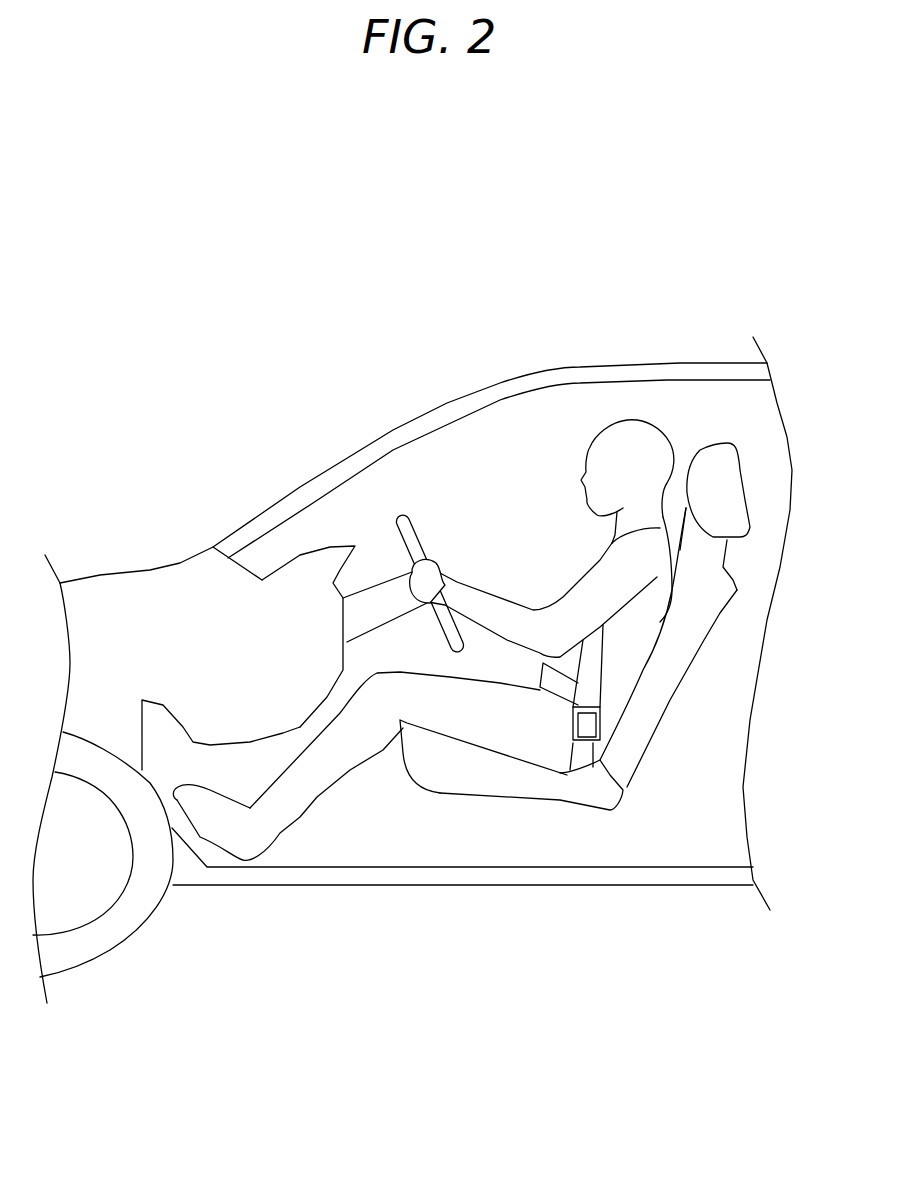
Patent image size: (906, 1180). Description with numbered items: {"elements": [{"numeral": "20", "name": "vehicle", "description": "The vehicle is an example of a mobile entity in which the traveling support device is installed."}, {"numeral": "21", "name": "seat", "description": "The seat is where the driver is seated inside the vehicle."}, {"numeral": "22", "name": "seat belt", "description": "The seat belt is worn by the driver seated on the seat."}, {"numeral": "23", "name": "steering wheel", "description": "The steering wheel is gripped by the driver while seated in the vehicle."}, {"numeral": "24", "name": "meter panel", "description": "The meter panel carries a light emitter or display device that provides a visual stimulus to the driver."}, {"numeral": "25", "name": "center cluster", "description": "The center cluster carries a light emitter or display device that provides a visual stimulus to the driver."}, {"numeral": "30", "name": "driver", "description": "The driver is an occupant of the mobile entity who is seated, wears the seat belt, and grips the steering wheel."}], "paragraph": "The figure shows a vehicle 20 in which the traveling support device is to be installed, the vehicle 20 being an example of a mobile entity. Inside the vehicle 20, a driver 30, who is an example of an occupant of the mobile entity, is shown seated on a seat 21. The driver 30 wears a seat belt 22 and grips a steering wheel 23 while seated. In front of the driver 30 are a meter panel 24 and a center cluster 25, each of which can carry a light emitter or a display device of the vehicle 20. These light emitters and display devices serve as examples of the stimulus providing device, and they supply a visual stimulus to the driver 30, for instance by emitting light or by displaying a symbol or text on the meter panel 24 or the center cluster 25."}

The vehicle 20 is at (400, 389).
The seat 21 is at (662, 688).
The seat belt 22 is at (592, 647).
The steering wheel 23 is at (405, 523).
The instrument panel 24 is at (313, 568).
The knee bolster 25 is at (313, 687).
The occupant 30 is at (630, 438).